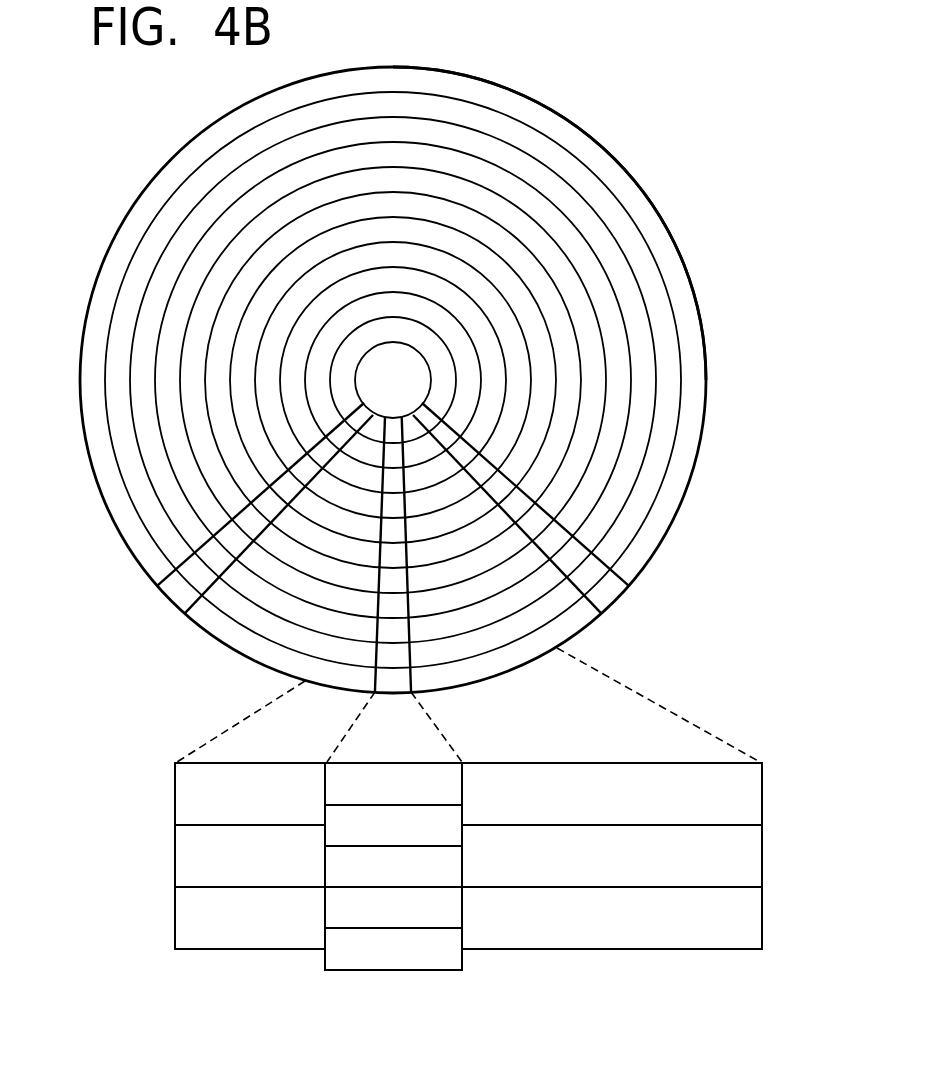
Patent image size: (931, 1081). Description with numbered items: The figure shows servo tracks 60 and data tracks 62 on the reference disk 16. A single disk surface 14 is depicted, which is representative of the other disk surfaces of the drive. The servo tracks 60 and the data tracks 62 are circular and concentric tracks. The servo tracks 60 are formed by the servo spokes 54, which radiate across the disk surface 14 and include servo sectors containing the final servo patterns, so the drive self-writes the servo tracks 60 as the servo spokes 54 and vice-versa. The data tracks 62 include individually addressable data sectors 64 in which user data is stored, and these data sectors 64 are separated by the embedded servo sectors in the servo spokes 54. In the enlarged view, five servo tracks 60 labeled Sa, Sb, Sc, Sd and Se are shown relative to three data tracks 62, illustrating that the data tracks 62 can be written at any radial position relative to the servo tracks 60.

The disk surface 14 is at (656, 548).
The reference disk 16 is at (445, 380).
The servo spokes 54 is at (177, 588).
The servo tracks 60 is at (406, 745).
The data tracks 62 is at (583, 745).
The data sectors 64 is at (683, 390).